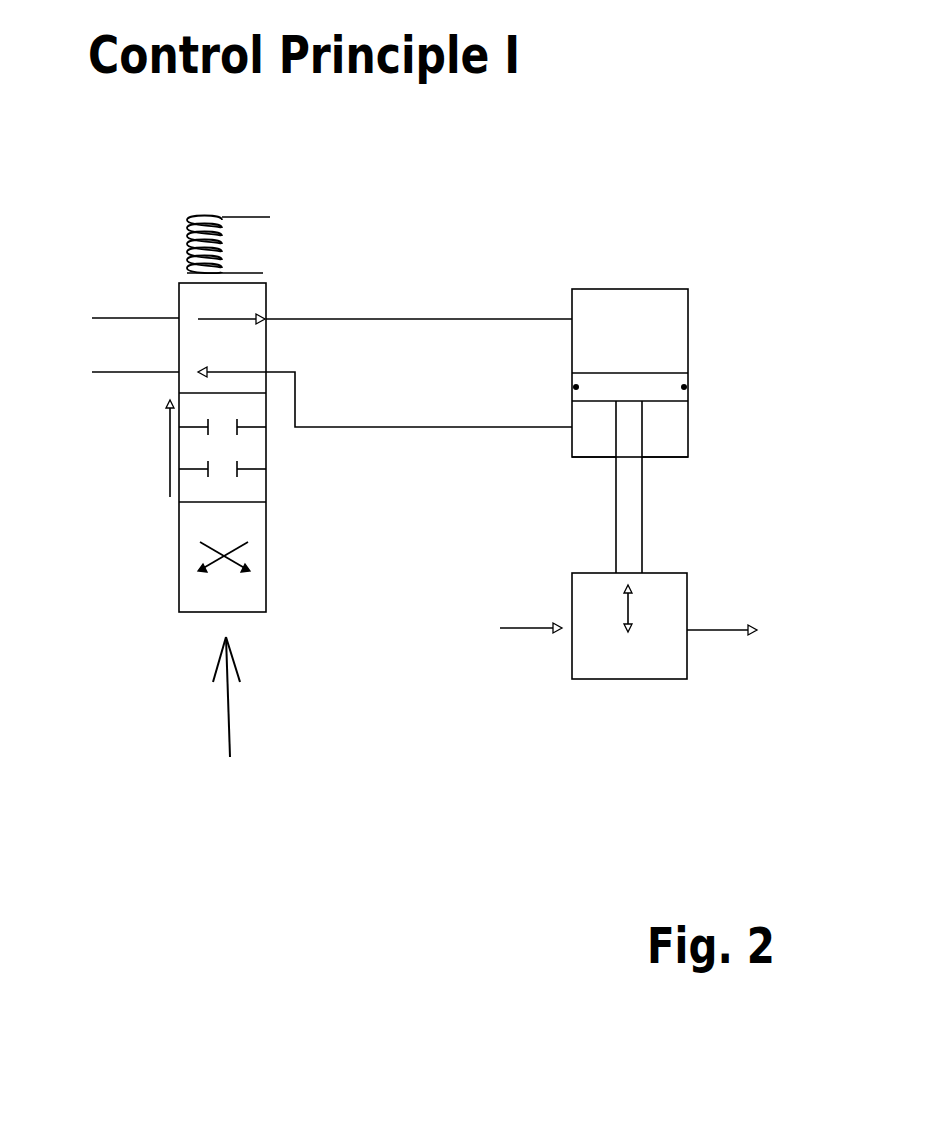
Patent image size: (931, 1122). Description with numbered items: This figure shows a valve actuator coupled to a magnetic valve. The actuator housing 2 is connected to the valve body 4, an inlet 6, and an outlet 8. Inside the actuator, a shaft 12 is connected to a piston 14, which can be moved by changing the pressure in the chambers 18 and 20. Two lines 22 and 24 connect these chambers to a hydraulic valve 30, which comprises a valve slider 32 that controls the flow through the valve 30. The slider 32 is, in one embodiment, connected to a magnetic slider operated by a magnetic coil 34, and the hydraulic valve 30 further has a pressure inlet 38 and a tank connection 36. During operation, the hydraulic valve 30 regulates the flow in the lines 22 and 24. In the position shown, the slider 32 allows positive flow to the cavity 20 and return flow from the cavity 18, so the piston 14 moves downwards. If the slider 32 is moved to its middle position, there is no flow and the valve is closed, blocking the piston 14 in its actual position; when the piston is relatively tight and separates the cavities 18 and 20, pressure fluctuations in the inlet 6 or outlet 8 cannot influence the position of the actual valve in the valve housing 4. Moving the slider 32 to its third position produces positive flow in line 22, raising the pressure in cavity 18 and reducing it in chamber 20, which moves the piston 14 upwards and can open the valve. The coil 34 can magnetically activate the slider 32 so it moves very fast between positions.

The actuator housing 2 is at (702, 360).
The valve body 4 is at (715, 582).
The inlet 6 is at (528, 628).
The outlet 8 is at (720, 631).
The shaft 12 is at (632, 465).
The piston 14 is at (660, 395).
The chamber 18 is at (578, 443).
The chamber 20 is at (630, 343).
The line 22 is at (433, 427).
The line 24 is at (470, 318).
The hydraulic valve 30 is at (280, 300).
The valve slider 32 is at (222, 731).
The magnetic coil 34 is at (188, 232).
The tank connection 36 is at (127, 373).
The pressure inlet 38 is at (127, 318).